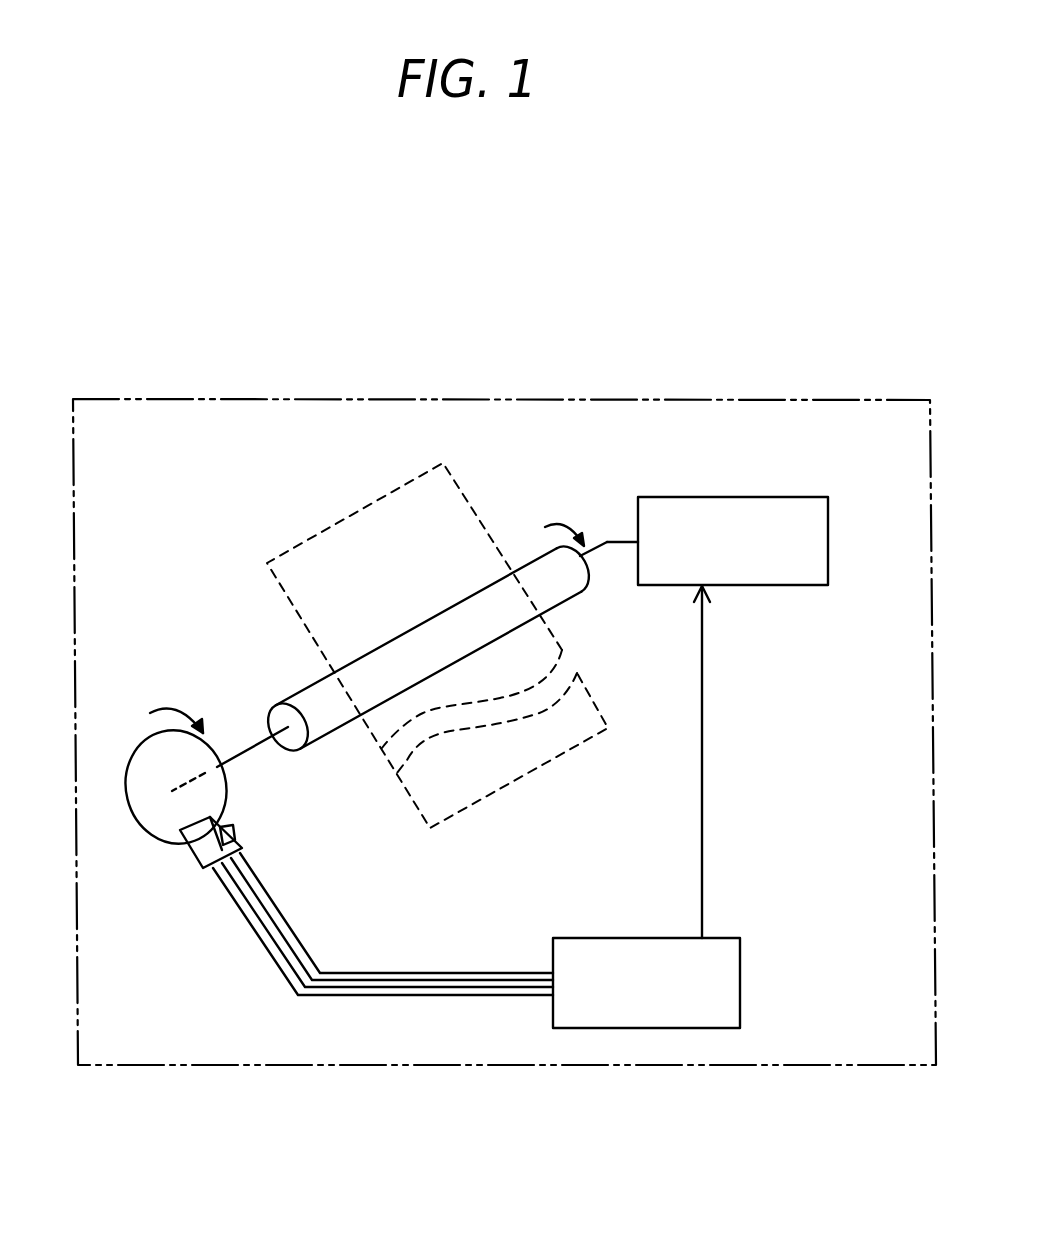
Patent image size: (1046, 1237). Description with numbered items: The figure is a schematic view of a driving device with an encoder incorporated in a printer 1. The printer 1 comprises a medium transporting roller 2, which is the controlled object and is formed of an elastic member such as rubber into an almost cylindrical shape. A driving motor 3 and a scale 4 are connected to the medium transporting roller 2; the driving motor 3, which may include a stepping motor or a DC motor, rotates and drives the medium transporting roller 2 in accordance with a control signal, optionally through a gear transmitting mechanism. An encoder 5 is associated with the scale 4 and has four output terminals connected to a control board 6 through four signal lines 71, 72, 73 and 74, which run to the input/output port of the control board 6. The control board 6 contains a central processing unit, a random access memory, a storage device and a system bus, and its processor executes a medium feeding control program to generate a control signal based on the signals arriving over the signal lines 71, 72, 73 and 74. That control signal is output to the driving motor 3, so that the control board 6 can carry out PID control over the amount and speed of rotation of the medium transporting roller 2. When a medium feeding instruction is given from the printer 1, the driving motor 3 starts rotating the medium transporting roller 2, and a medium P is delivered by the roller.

The printer 1 is at (657, 399).
The medium transporting roller 2 is at (562, 602).
The driving motor 3 is at (828, 560).
The scale 4 is at (223, 793).
The encoder 5 is at (243, 846).
The control board 6 is at (740, 1000).
The signal line 71 is at (400, 973).
The signal line 72 is at (430, 980).
The signal line 73 is at (460, 987).
The signal line 74 is at (485, 995).
The medium P is at (518, 777).